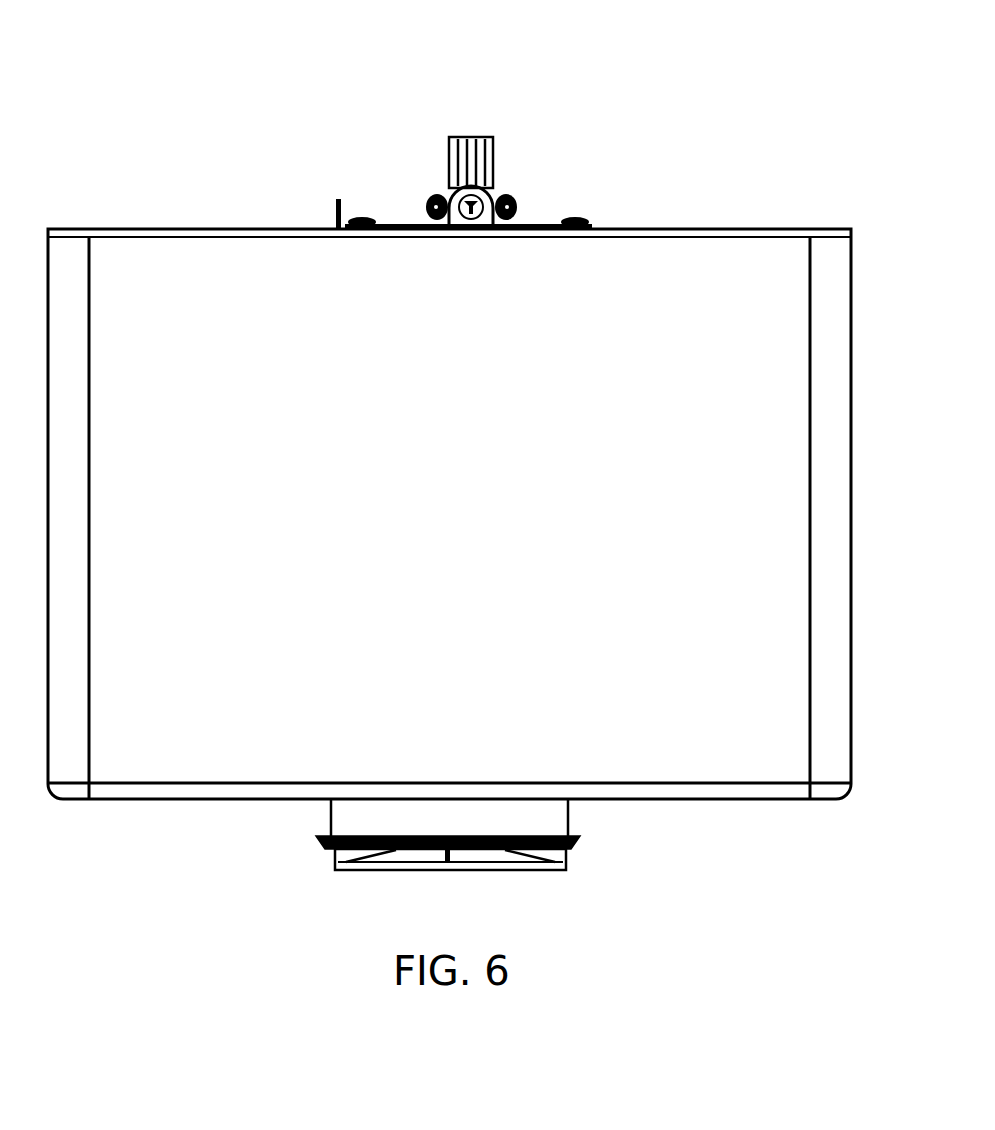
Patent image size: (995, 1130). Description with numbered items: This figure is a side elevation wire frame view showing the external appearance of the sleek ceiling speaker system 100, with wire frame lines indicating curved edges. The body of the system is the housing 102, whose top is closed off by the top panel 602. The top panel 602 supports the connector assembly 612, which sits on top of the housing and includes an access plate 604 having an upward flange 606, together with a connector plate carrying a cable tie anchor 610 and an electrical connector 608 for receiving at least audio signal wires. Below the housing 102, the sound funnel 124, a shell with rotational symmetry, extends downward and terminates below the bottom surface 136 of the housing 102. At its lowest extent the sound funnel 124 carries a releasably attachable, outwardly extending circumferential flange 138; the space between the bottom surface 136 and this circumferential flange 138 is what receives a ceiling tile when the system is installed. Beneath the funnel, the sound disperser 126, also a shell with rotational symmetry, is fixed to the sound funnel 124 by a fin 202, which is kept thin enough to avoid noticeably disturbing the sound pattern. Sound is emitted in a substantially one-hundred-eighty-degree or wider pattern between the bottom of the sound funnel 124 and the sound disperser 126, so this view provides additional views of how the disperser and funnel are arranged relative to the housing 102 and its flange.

The sleek ceiling speaker system 100 is at (175, 51).
The housing 102 is at (178, 742).
The sound funnel 124 is at (340, 818).
The sound disperser 126 is at (493, 857).
The bottom surface 136 is at (729, 799).
The circumferential flange 138 is at (585, 836).
The fin 202 is at (446, 855).
The top panel 602 is at (262, 228).
The access plate 604 is at (540, 225).
The upward flange 606 is at (338, 200).
The electrical connector 608 is at (505, 190).
The cable tie anchor 610 is at (458, 218).
The connector assembly 612 is at (446, 100).